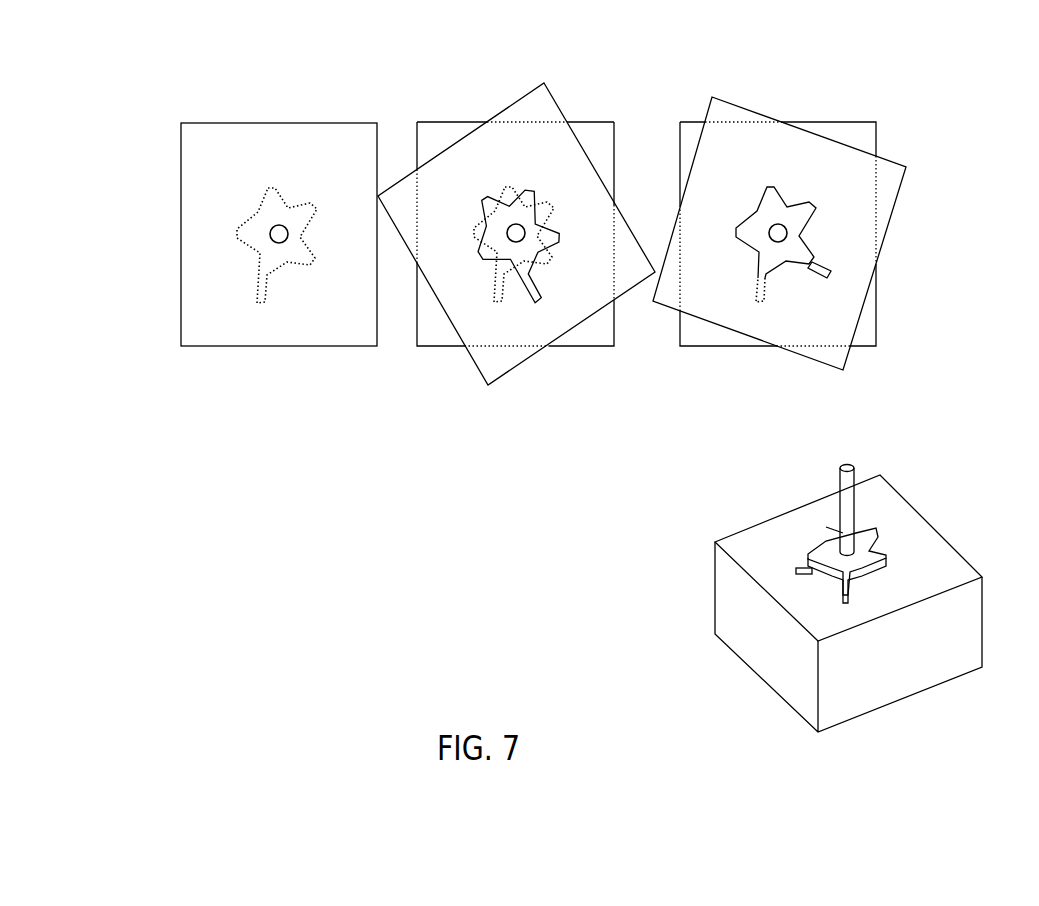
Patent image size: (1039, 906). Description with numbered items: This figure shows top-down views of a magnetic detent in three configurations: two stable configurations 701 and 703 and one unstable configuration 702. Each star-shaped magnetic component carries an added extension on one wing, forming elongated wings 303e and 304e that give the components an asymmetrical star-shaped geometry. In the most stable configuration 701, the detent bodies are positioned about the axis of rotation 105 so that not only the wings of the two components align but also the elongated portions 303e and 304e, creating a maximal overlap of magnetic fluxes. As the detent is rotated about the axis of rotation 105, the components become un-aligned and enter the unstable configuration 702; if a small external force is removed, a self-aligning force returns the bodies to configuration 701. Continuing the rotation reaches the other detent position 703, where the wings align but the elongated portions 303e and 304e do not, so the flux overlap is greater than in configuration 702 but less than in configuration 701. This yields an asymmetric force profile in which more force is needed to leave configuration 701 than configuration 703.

The most stable configuration 701 is at (300, 188).
The unstable configuration 702 is at (516, 208).
The second detent position 703 is at (779, 200).
The axis of rotation 105 is at (280, 234).
The elongated wing of first magnetic component 303e is at (258, 305).
The elongated wing of second magnetic component 304e is at (533, 306).